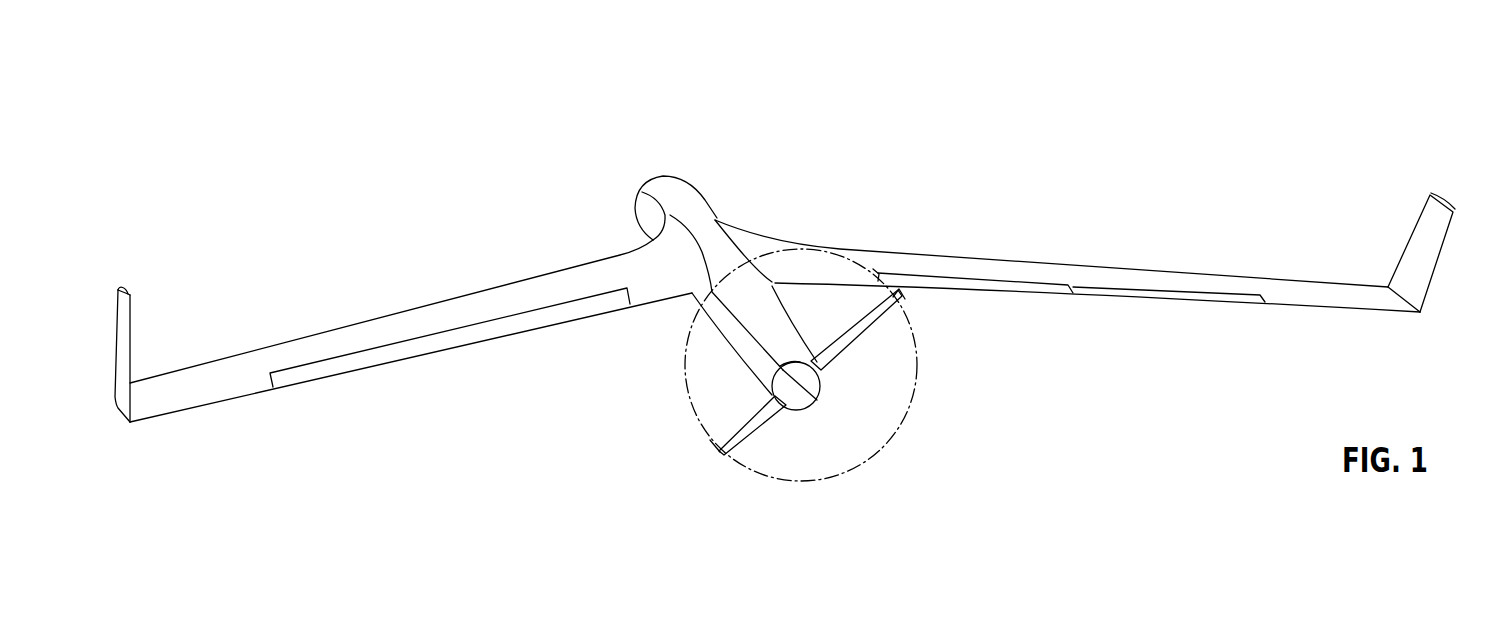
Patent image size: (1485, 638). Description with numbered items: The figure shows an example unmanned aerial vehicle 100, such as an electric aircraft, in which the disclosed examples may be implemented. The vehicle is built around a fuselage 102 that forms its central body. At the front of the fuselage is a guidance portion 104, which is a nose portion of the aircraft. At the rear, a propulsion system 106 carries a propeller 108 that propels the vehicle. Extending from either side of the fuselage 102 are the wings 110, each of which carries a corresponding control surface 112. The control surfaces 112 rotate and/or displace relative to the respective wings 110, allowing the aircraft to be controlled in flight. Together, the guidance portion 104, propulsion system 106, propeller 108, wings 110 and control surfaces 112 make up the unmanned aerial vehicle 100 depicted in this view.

The unmanned aerial vehicle 100 is at (1338, 43).
The fuselage 102 is at (747, 203).
The guidance portion 104 is at (677, 176).
The propulsion system 106 is at (792, 312).
The propeller 108 is at (883, 312).
The wings 110 is at (453, 297).
The control surfaces 112 is at (302, 383).